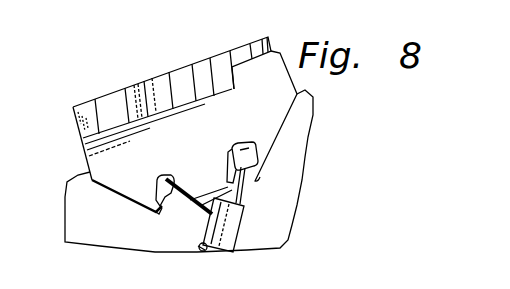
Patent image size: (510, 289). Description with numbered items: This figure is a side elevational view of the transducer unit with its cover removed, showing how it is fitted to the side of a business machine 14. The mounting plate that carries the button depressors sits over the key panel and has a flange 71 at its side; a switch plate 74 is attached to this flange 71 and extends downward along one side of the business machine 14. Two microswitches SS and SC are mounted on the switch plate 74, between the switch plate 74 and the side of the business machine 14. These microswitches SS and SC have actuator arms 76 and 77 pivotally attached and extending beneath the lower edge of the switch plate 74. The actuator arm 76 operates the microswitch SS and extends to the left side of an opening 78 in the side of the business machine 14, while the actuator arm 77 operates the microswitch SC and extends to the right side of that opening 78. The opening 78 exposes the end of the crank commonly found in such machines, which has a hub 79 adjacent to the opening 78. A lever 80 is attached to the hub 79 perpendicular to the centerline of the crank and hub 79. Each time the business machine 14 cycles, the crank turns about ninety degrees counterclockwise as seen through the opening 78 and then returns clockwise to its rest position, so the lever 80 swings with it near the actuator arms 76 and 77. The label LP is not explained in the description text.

The lamps LP is at (166, 72).
The microswitch SS is at (158, 185).
The microswitch SC is at (231, 150).
The business machine 14 is at (65, 222).
The flange 71 is at (87, 161).
The switch plate 74 is at (140, 194).
The actuator arm 76 is at (176, 221).
The actuator arm 77 is at (246, 200).
The opening 78 is at (198, 246).
The hub 79 is at (204, 251).
The lever 80 is at (241, 228).